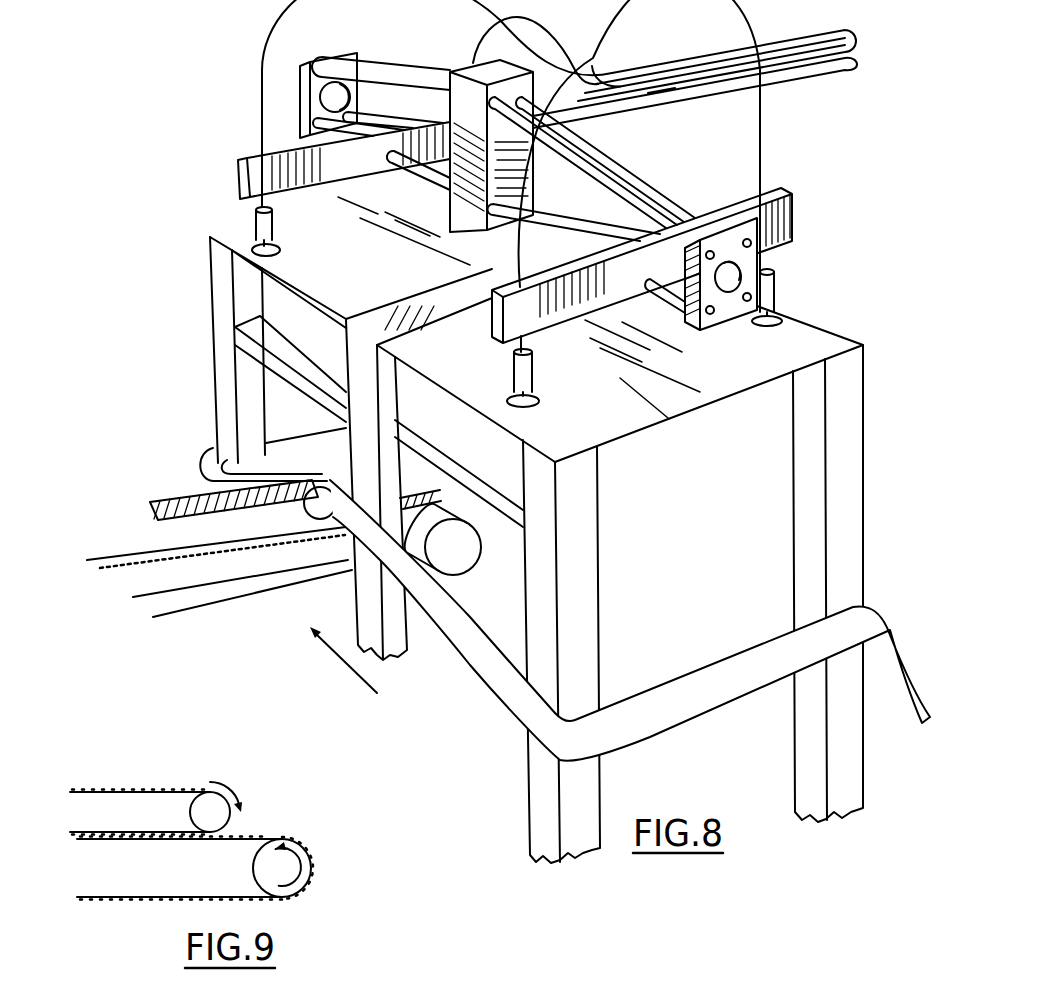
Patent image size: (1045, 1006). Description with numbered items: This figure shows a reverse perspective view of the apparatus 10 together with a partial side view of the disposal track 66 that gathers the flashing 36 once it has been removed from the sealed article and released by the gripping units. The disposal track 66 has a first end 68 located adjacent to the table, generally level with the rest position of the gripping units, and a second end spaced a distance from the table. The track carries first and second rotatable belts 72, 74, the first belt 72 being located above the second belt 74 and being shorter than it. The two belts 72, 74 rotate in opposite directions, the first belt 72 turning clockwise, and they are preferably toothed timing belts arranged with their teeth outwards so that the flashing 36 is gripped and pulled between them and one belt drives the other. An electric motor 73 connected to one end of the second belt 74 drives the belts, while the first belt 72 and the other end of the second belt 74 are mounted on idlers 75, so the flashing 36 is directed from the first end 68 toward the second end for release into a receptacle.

In FIG. 8, the web handling apparatus 10 is at (818, 272).
In FIG. 8, the flashing 36 is at (474, 667).
In FIG. 8, the disposal track 66 is at (241, 604).
In FIG. 9, the first end of the disposal track 68 is at (146, 760).
In FIG. 8, the first rotatable belt 72 is at (190, 497).
In FIG. 9, the first rotatable belt 72 is at (127, 792).
In FIG. 8, the electric motor 73 is at (472, 568).
In FIG. 8, the second rotatable belt 74 is at (205, 606).
In FIG. 9, the second rotatable belt 74 is at (148, 898).
In FIG. 8, the idlers 75 is at (328, 487).